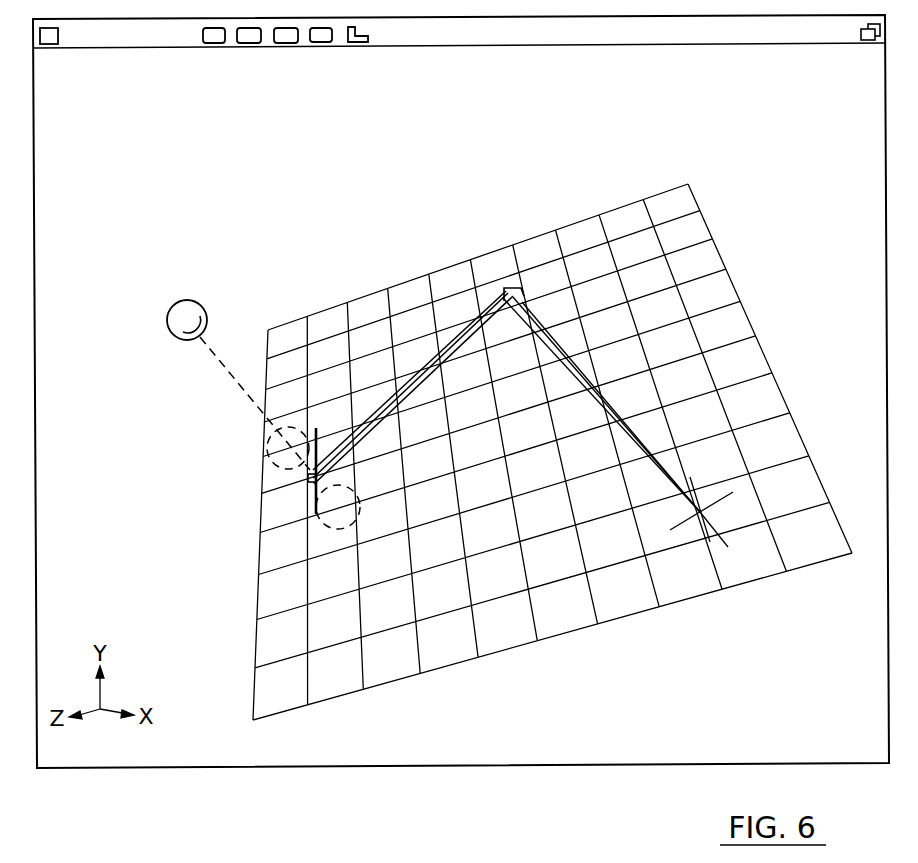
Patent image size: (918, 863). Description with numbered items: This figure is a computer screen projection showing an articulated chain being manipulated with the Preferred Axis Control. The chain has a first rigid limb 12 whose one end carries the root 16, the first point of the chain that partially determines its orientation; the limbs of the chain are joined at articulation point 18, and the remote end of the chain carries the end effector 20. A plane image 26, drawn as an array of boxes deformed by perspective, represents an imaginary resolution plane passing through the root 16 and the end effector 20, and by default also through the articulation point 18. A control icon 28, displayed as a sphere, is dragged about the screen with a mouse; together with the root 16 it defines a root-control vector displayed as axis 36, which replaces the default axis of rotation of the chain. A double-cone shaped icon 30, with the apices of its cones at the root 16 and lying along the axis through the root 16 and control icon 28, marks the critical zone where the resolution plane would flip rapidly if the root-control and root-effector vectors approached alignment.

The first rigid limb 12 is at (428, 366).
The root 16 is at (311, 484).
The articulation point 18 is at (518, 290).
The end effector 20 is at (695, 520).
The plane image 26 is at (752, 323).
The control icon 28 is at (193, 301).
The double-cone shaped icon 30 is at (269, 448).
The axis 36 is at (229, 371).